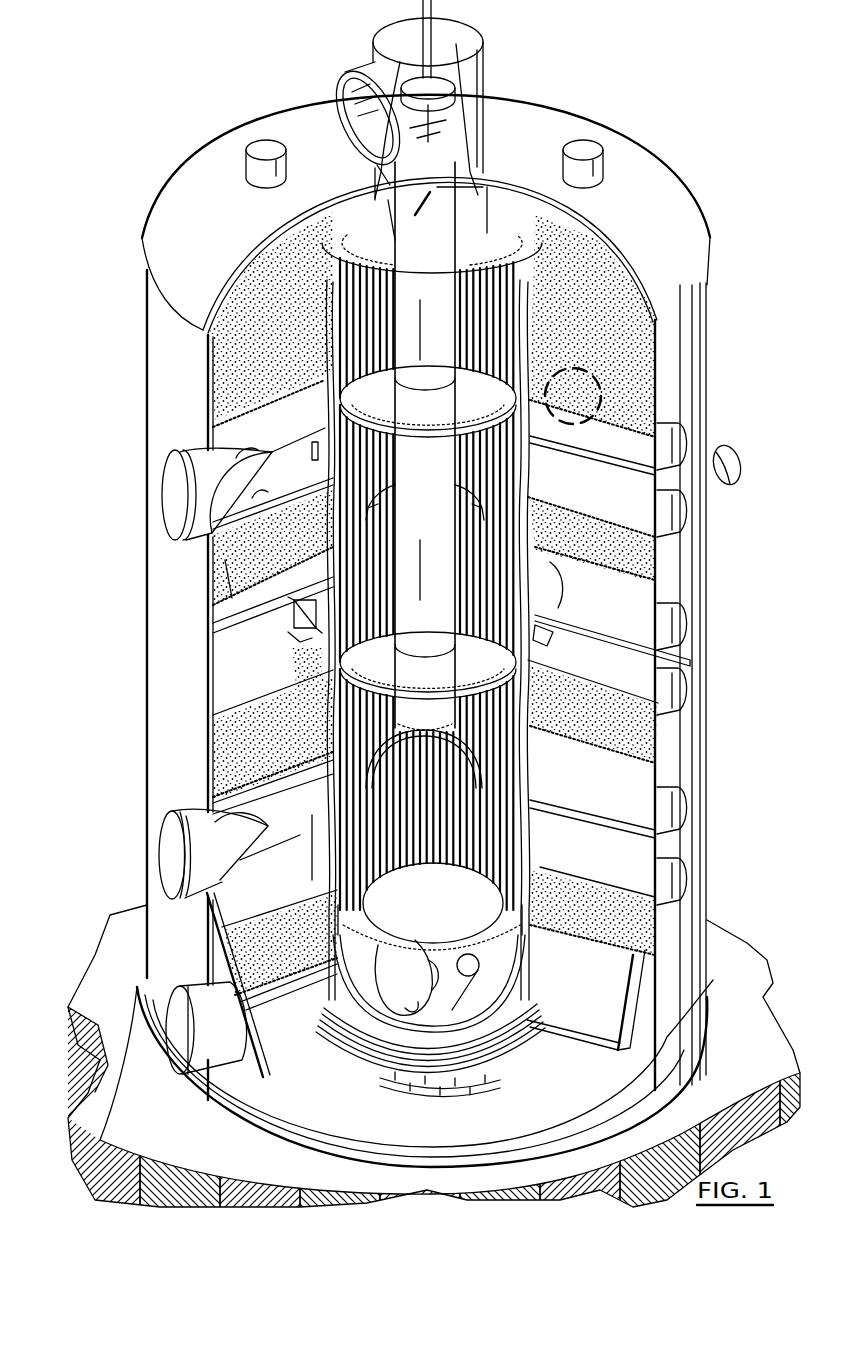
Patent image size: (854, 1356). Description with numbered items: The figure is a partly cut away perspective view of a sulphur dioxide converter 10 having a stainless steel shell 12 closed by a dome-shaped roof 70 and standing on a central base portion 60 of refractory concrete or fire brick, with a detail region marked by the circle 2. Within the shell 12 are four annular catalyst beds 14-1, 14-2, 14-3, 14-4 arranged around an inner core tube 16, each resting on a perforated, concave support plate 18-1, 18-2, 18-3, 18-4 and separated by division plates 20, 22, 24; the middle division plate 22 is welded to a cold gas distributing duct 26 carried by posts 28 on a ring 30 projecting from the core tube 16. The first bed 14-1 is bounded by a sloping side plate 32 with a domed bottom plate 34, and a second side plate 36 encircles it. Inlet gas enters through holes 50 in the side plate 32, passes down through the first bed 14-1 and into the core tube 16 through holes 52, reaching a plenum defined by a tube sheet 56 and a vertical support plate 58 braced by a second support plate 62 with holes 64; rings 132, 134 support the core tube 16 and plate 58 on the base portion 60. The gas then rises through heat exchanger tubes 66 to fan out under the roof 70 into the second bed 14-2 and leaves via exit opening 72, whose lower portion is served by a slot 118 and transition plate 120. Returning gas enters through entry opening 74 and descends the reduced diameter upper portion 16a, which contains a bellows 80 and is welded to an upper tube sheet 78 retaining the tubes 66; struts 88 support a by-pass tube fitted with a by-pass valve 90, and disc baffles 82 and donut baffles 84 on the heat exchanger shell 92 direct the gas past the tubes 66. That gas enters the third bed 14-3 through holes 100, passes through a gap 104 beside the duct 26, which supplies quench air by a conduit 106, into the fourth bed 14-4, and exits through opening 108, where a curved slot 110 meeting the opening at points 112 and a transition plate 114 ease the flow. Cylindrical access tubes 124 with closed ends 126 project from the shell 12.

The detail area 2 is at (585, 378).
The converter 10 is at (200, 107).
The shell 12 is at (207, 682).
The first catalyst bed 14-1 is at (290, 985).
The second catalyst bed 14-2 is at (293, 410).
The third catalyst bed 14-3 is at (238, 620).
The fourth catalyst bed 14-4 is at (262, 812).
The inner core tube 16 is at (520, 832).
The reduced diameter upper portion of core tube 16a is at (483, 133).
The first bed support plate 18-1 is at (582, 968).
The second bed support plate 18-2 is at (622, 408).
The third bed support plate 18-3 is at (627, 582).
The fourth bed support plate 18-4 is at (600, 767).
The upper division plate 20 is at (255, 470).
The middle division plate 22 is at (230, 632).
The division plate 24 is at (275, 855).
The cold gas distributing duct 26 is at (556, 585).
The posts 28 is at (295, 633).
The ring 30 is at (553, 640).
The side plate 32 is at (250, 1023).
The bottom plate 34 is at (297, 1060).
The second side plate 36 is at (647, 1007).
The holes 50 is at (217, 912).
The holes 52 is at (314, 984).
The tube sheet 56 is at (473, 925).
The vertical annular support plate 58 is at (403, 974).
The central base portion 60 is at (513, 1057).
The second annular support plate 62 is at (423, 990).
The holes 64 is at (452, 985).
The heat exchanger tubes 66 is at (430, 855).
The converter roof 70 is at (180, 183).
The exit opening 72 is at (193, 492).
The entry opening 74 is at (340, 118).
The upper tube sheet 78 is at (522, 252).
The bellows 80 is at (477, 218).
The disc baffles 82 is at (427, 430).
The donut baffles 84 is at (367, 522).
The struts 88 is at (457, 182).
The by-pass valve 90 is at (443, 83).
The heat exchanger shell 92 is at (312, 825).
The holes 100 is at (312, 453).
The gap 104 is at (290, 610).
The conduit 106 is at (694, 660).
The exit opening 108 is at (195, 838).
The curved slot 110 is at (236, 808).
The points 112 is at (185, 830).
The transition plate 114 is at (187, 890).
The slot 118 is at (236, 458).
The transition plate 120 is at (258, 505).
The cylindrical tubes 124 is at (600, 170).
The closed ends 126 is at (592, 134).
The ring 132 is at (467, 1062).
The ring 134 is at (415, 1010).